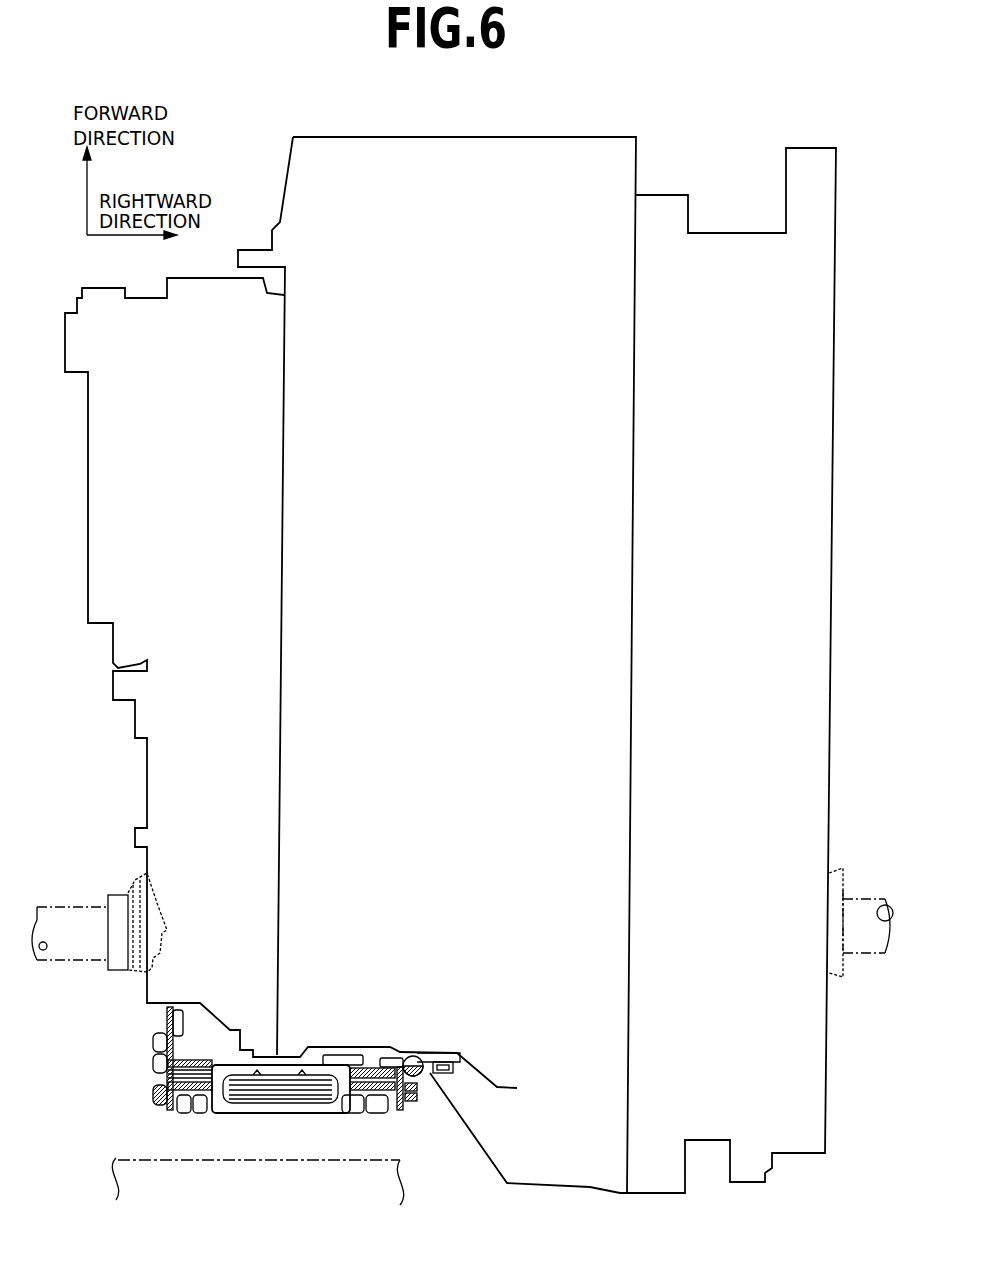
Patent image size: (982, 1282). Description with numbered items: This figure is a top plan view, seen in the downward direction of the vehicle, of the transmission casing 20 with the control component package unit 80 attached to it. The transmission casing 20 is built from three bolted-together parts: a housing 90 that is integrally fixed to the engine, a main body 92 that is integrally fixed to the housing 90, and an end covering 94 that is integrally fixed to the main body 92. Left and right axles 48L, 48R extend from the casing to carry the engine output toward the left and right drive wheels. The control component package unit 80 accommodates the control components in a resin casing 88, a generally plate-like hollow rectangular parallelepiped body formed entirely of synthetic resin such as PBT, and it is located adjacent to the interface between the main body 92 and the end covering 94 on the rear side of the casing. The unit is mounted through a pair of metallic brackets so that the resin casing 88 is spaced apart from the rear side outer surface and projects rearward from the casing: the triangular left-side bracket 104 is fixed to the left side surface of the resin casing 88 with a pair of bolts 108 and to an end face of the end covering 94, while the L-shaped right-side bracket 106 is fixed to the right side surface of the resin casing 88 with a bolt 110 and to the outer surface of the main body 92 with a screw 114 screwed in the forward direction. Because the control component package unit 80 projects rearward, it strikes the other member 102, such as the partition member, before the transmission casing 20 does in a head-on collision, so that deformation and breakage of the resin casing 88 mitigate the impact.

The transmission casing 20 is at (703, 100).
The housing 90 is at (730, 250).
The main body 92 is at (448, 160).
The end covering 94 is at (106, 466).
The left axle 48L is at (69, 942).
The right axle 48R is at (862, 942).
The control component package unit 80 is at (277, 1135).
The resin casing 88 is at (303, 1113).
The other member 102 is at (125, 1152).
The left-side bracket 104 is at (153, 1045).
The right-side bracket 106 is at (412, 1056).
The bolts 108 is at (153, 1097).
The bolt 110 is at (420, 1092).
The screw 114 is at (452, 1080).